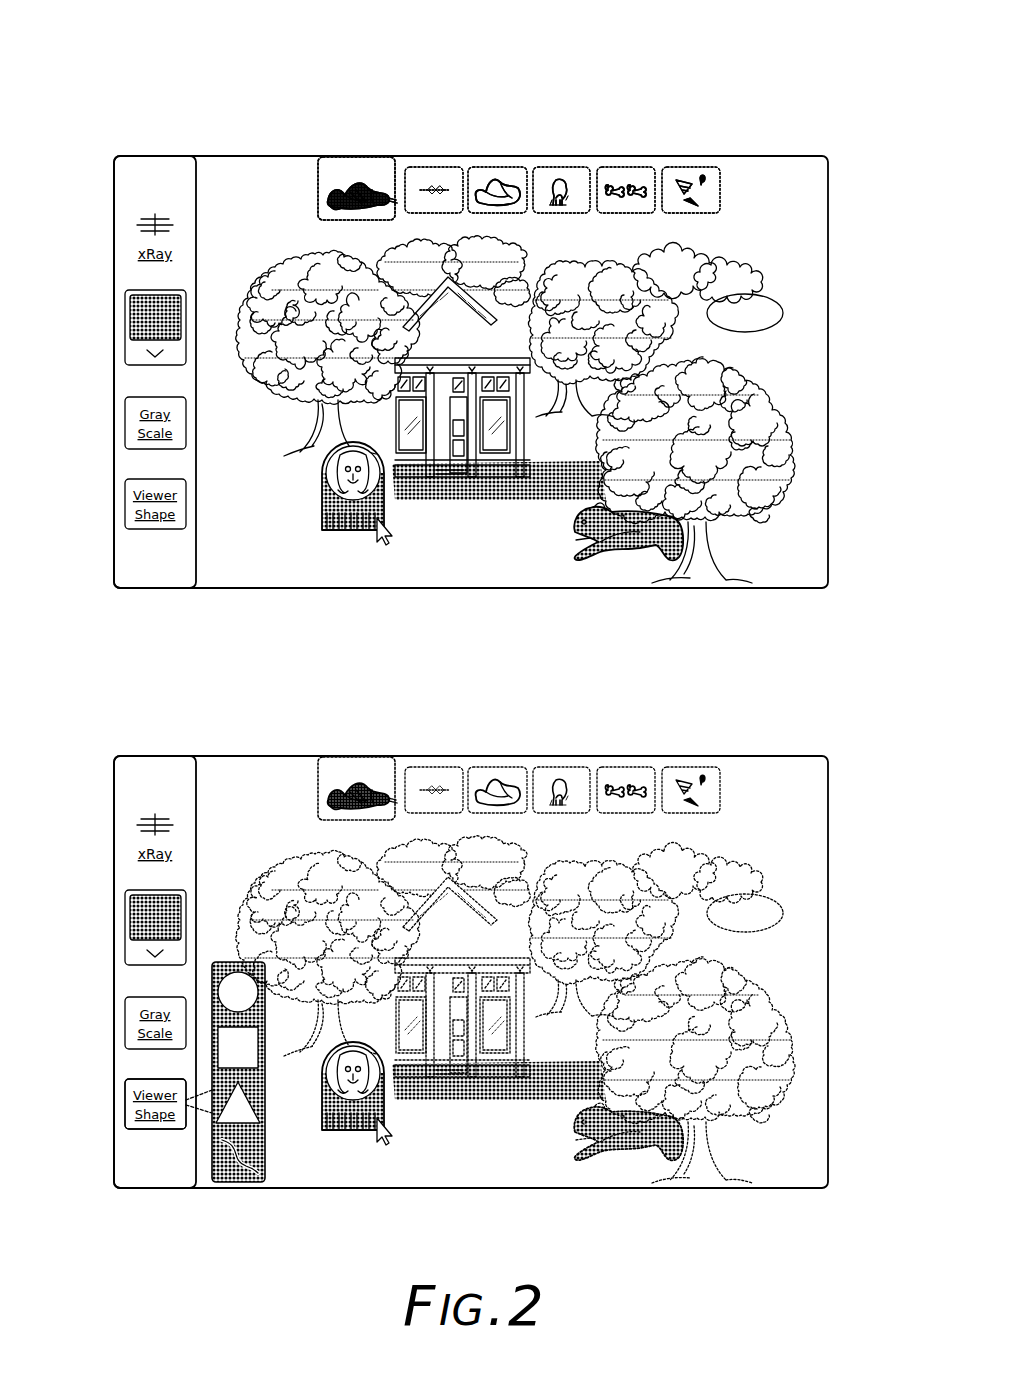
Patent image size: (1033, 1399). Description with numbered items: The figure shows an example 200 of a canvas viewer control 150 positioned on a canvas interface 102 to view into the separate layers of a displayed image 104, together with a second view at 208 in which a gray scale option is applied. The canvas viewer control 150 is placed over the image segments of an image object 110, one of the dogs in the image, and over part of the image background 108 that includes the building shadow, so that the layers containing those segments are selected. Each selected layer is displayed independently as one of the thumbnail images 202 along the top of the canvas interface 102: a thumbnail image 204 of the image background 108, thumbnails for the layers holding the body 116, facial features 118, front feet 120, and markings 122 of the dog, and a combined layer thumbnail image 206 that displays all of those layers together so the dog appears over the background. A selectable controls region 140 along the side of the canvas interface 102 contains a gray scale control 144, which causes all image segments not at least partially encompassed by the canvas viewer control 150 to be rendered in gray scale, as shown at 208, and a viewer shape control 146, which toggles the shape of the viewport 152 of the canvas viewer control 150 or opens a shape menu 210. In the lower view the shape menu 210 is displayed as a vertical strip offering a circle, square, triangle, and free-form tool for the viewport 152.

The example 200 is at (630, 70).
The gray scale view 208 is at (630, 718).
The canvas interface 102 is at (263, 156).
The image 104 is at (238, 565).
The image background 108 is at (246, 487).
The image object 110 is at (397, 502).
The body of the dog 116 is at (510, 167).
The facial features 118 is at (574, 167).
The front feet 120 is at (638, 167).
The markings 122 is at (702, 167).
The selectable controls region 140 is at (158, 178).
The gray scale control 144 is at (123, 393).
The viewer shape control 146 is at (123, 1075).
The canvas viewer control 150 is at (352, 531).
The viewport 152 is at (335, 1128).
The thumbnail images 202 is at (740, 182).
The thumbnail image of the image background 204 is at (438, 166).
The combined layer thumbnail image 206 is at (356, 157).
The shape menu 210 is at (222, 1173).